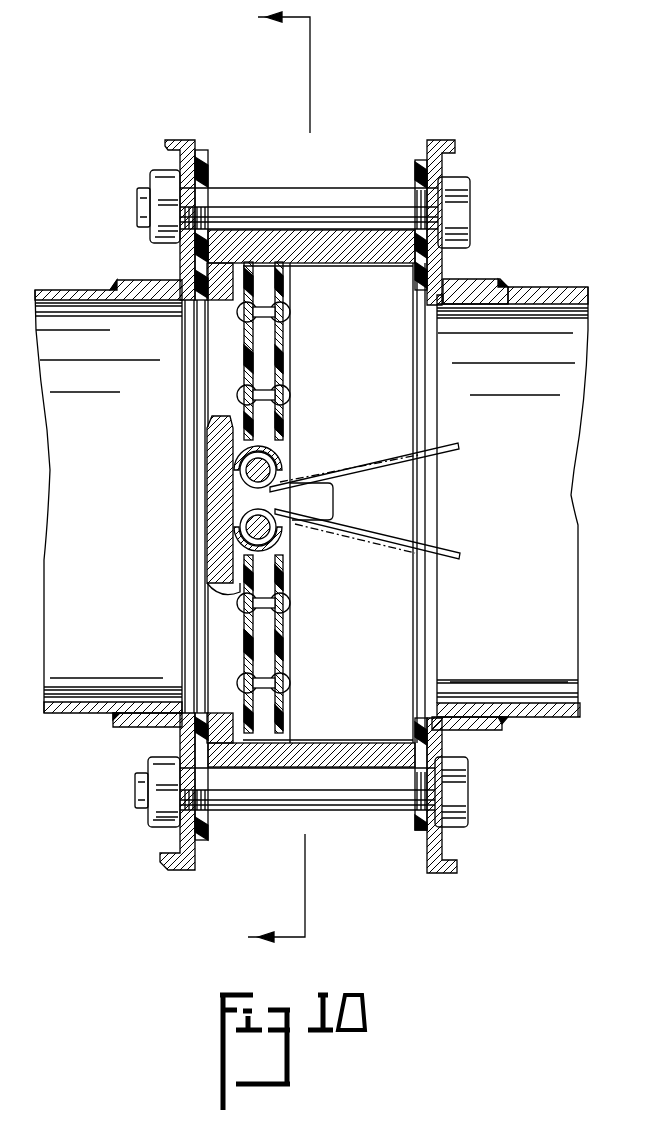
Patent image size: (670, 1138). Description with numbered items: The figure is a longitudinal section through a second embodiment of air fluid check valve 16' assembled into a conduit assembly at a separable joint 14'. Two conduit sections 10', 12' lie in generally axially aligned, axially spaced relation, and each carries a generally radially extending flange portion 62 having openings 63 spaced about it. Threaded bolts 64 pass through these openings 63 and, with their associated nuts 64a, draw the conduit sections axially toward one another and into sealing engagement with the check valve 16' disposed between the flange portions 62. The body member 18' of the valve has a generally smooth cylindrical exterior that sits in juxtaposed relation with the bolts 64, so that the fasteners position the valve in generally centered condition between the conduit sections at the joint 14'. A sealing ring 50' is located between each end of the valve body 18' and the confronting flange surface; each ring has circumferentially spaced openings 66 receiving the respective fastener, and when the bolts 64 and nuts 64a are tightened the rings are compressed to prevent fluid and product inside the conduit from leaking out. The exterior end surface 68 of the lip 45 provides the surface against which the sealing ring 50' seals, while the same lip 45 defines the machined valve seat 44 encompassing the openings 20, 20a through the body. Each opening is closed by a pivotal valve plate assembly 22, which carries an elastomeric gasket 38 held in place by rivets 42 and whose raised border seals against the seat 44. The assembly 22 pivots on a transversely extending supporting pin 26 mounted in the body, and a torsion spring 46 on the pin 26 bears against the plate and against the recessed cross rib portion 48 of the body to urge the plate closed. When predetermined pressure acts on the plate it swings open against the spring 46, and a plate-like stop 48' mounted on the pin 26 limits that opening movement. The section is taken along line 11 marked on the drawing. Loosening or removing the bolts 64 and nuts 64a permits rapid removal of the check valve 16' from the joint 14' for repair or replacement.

The section line 11- 11 is at (261, 480).
The conduit section 10' is at (108, 482).
The conduit section 12' is at (524, 487).
The separable joint 14' is at (496, 273).
The check valve 16' is at (396, 443).
The body member 18' is at (340, 453).
The opening 20 is at (220, 397).
The opening 20a is at (225, 582).
The valve plate assembly 22 is at (290, 340).
The supporting pin 26 is at (247, 473).
The gasket 38 is at (257, 357).
The rivet 42 is at (287, 684).
The machined surface 44 is at (307, 237).
The lip 45 is at (218, 257).
The torsion spring 46 is at (280, 457).
The recessed cross rib portion 48 is at (166, 499).
The stop 48' is at (345, 500).
The sealing ring 50' is at (300, 437).
The flange portion 62 is at (180, 163).
The opening 63 is at (452, 217).
The threaded bolt 64 is at (358, 190).
The nut 64a is at (150, 180).
The opening 66 is at (207, 183).
The exterior end surface 68 is at (206, 352).